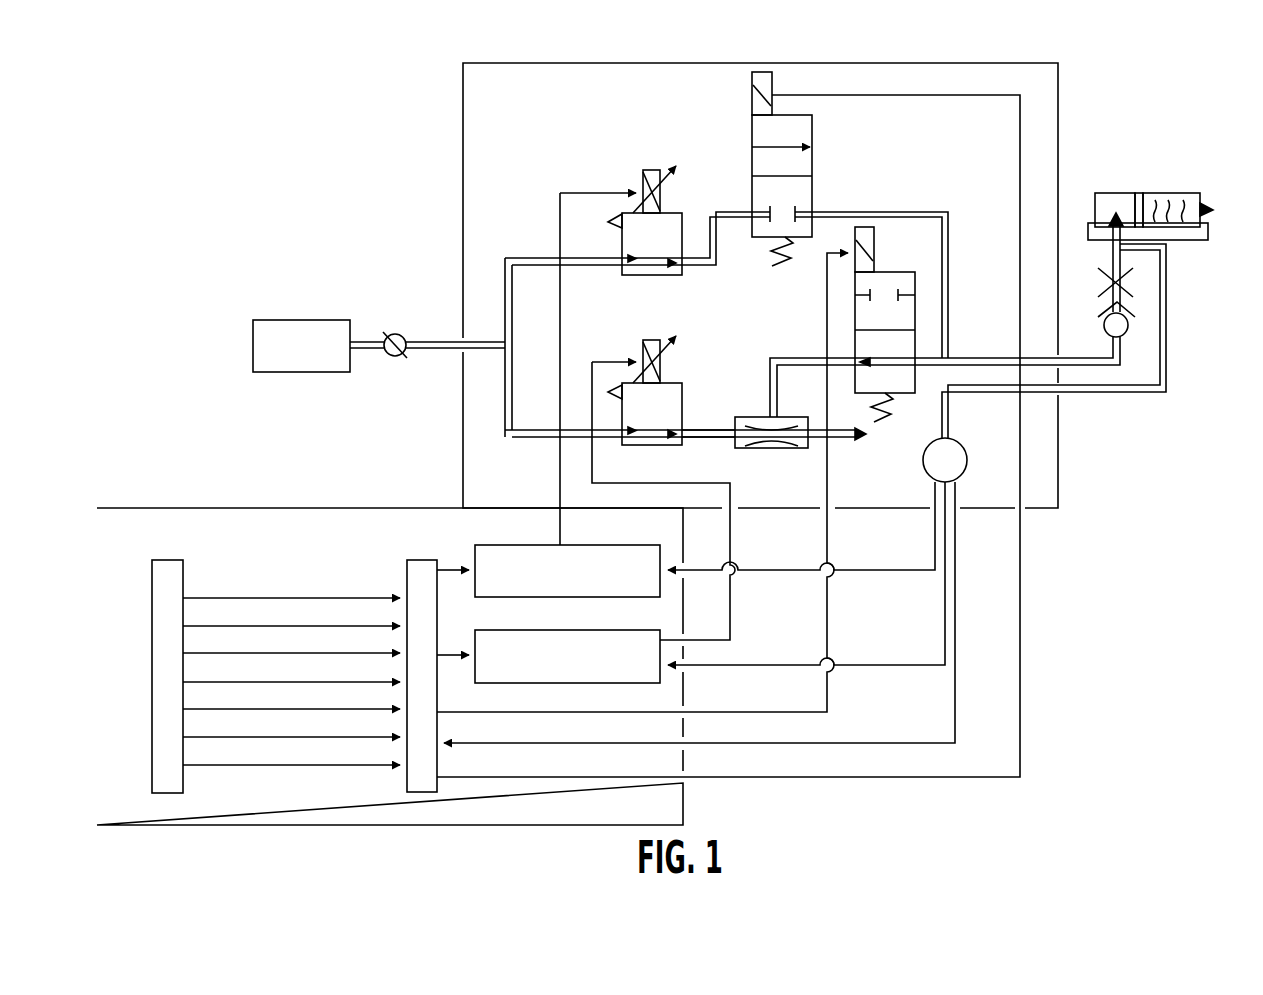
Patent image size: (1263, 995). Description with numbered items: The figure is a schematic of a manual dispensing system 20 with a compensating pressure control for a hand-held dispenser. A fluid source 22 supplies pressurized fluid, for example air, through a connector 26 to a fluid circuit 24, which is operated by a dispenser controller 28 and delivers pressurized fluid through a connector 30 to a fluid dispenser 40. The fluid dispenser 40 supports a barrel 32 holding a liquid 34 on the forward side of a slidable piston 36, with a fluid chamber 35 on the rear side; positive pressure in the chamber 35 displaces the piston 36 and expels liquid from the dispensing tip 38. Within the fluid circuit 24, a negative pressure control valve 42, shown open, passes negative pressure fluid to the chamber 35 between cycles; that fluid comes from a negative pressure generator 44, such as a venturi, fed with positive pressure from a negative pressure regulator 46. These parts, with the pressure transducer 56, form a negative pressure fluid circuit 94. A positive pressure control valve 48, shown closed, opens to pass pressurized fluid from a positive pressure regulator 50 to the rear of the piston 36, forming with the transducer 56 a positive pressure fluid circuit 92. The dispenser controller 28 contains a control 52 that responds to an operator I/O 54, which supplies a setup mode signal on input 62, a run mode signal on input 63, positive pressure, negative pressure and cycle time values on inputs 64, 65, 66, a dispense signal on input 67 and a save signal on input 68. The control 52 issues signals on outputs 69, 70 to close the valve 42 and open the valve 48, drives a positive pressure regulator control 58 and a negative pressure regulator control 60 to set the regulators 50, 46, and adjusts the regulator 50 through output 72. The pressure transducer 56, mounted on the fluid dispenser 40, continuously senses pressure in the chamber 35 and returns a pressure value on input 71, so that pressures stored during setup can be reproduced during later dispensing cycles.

The manual dispensing system 20 is at (246, 187).
The fluid source 22 is at (259, 318).
The fluid circuit 24 is at (760, 285).
The connector 26 is at (405, 334).
The dispenser controller 28 is at (390, 666).
The connector 30 is at (1128, 333).
The barrel 32 is at (1104, 193).
The liquid 34 is at (1193, 195).
The fluid chamber 35 is at (1157, 174).
The piston 36 is at (1139, 193).
The dispensing tip 38 is at (1214, 210).
The fluid dispenser 40 is at (1186, 242).
The negative pressure control valve 42 is at (881, 272).
The negative pressure generator 44 is at (742, 452).
The negative pressure regulator 46 is at (686, 386).
The positive pressure control valve 48 is at (813, 138).
The positive pressure regulator 50 is at (683, 216).
The control 52 is at (407, 565).
The operator I/O 54 is at (152, 564).
The pressure transducer 56 is at (966, 458).
The positive pressure regulator control 58 is at (478, 546).
The negative pressure regulator control 60 is at (478, 630).
The control input 62 is at (372, 597).
The control input 63 is at (366, 625).
The control input 64 is at (382, 652).
The control input 65 is at (382, 681).
The control input 66 is at (372, 708).
The control input 67 is at (366, 736).
The control input 68 is at (359, 764).
The control output 69 is at (548, 712).
The control output 70 is at (572, 777).
The control input 71 is at (594, 742).
The output 72 is at (445, 657).
The positive pressure fluid circuit 92 is at (778, 282).
The negative pressure fluid circuit 94 is at (710, 400).